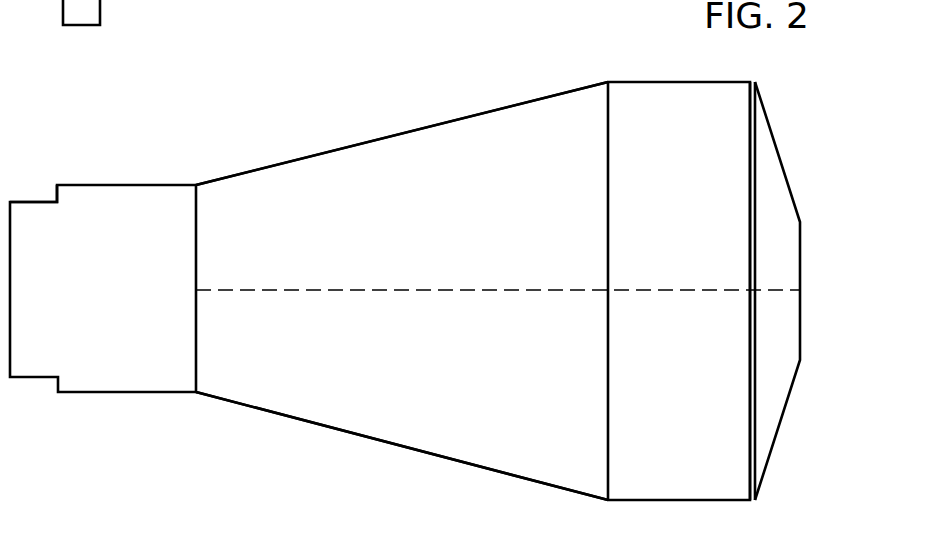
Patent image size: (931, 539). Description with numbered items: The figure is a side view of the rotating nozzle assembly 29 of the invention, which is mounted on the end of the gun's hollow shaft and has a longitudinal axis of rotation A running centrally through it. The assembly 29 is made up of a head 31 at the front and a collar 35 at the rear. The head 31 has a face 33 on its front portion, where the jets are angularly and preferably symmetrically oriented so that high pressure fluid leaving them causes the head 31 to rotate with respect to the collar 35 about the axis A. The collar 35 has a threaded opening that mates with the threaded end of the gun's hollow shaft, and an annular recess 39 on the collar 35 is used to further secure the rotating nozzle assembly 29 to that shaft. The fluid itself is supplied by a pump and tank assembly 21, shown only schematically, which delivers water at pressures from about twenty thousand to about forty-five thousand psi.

The pump and tank assembly 21 is at (101, 5).
The rotating nozzle assembly 29 is at (504, 88).
The head 31 is at (448, 133).
The face 33 is at (765, 146).
The collar 35 is at (128, 372).
The annular recess 39 is at (30, 200).
The longitudinal axis of rotation A is at (775, 290).